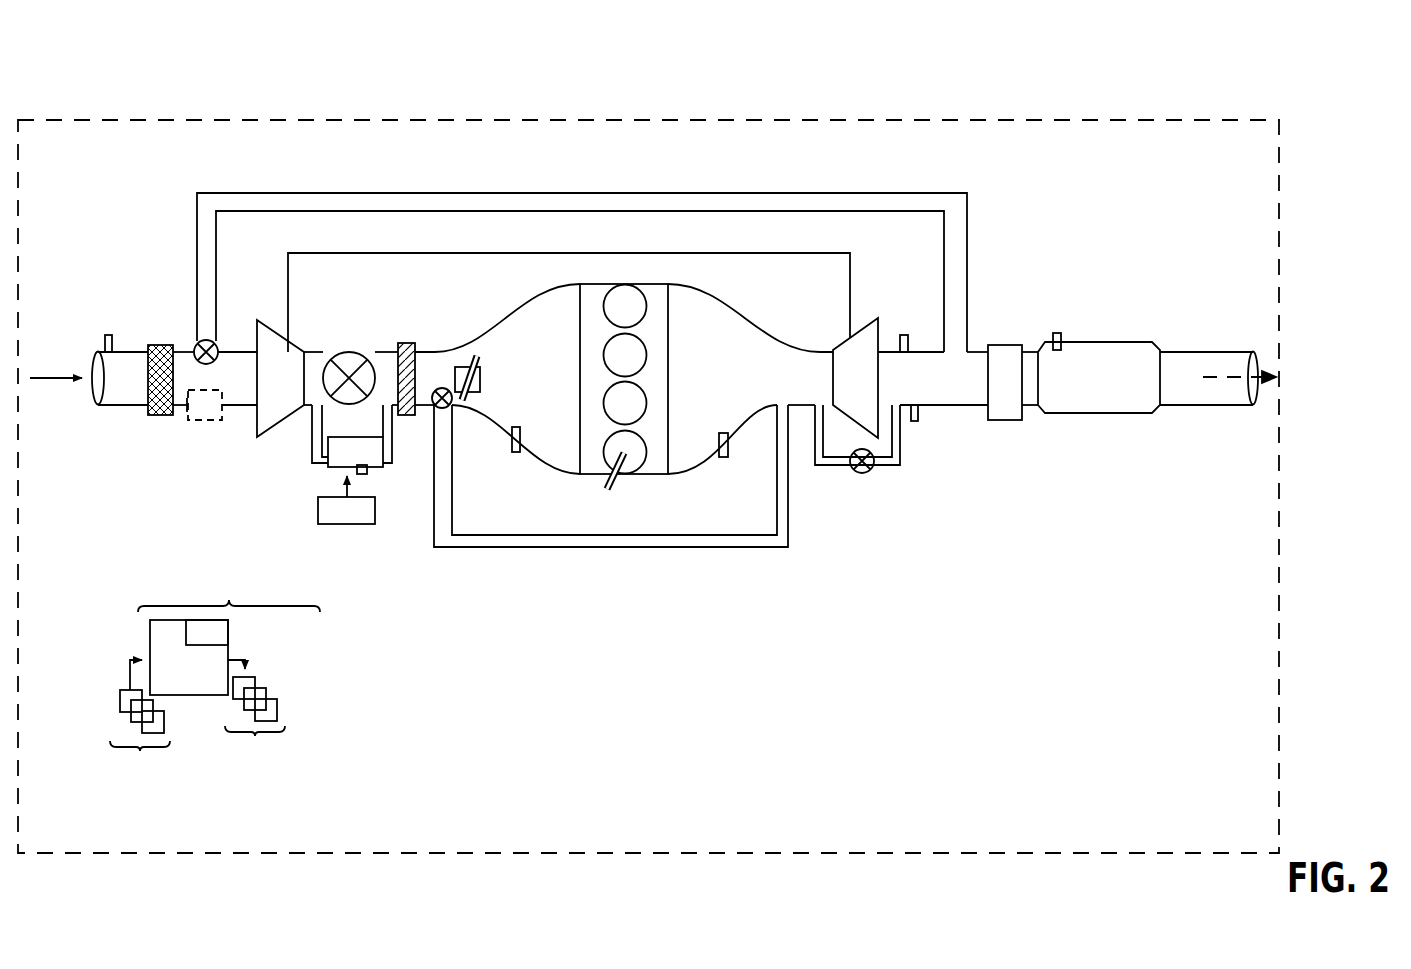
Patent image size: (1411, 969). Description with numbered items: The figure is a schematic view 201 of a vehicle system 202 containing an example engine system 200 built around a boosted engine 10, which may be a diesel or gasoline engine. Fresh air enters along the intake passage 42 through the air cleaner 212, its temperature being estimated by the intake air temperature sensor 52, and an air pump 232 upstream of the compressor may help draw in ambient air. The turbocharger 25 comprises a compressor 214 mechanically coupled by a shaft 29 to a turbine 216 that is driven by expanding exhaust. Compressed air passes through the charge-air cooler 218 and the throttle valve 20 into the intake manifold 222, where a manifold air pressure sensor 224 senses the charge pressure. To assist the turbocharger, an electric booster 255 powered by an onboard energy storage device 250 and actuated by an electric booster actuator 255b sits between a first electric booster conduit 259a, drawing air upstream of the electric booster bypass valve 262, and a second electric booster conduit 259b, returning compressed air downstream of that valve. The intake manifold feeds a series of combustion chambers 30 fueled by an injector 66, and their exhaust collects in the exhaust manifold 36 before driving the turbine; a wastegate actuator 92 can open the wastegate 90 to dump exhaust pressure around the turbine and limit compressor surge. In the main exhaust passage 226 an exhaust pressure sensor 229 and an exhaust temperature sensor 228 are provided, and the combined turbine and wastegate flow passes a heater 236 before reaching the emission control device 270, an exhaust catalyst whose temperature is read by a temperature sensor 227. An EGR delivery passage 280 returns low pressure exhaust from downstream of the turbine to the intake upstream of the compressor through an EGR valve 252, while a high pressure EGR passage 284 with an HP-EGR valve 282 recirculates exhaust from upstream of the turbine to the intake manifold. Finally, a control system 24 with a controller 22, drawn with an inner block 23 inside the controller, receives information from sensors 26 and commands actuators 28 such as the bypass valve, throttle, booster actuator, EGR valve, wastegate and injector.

The engine 10 is at (669, 362).
The throttle valve 20 is at (478, 392).
The controller 22 is at (189, 657).
The memory 23 is at (207, 632).
The control system 24 is at (229, 583).
The turbocharger 25 is at (273, 445).
The sensors 26 is at (145, 727).
The actuators 28 is at (270, 723).
The shaft 29 is at (738, 253).
The combustion chambers 30 is at (640, 302).
The exhaust manifold 36 is at (750, 379).
The intake passage 42 is at (108, 405).
The intake air temperature sensor 52 is at (108, 334).
The injector 66 is at (620, 478).
The wastegate 90 is at (895, 468).
The wastegate actuator 92 is at (858, 473).
The engine system 200 is at (1120, 240).
The schematic view 201 is at (1301, 40).
The vehicle system 202 is at (201, 118).
The air cleaner 212 is at (162, 344).
The compressor 214 is at (280, 378).
The turbine 216 is at (855, 378).
The charge-air cooler 218 is at (407, 343).
The intake manifold 222 is at (497, 379).
The manifold air pressure sensor 224 is at (512, 447).
The main exhaust passage 226 is at (727, 445).
The temperature sensor 227 is at (1057, 333).
The exhaust temperature sensor 228 is at (915, 422).
The exhaust pressure sensor 229 is at (904, 335).
The air pump 232 is at (200, 422).
The heater 236 is at (1012, 421).
The energy storage device 250 is at (346, 500).
The EGR valve 252 is at (217, 344).
The electric booster 255 is at (355, 452).
The electric booster actuator 255b is at (365, 474).
The first electric booster conduit 259a is at (312, 460).
The second electric booster conduit 259b is at (389, 462).
The electric booster bypass valve 262 is at (349, 352).
The emission control device 270 is at (1092, 342).
The EGR delivery passage 280 is at (632, 212).
The HP-EGR valve 282 is at (452, 408).
The high pressure EGR passage 284 is at (605, 548).